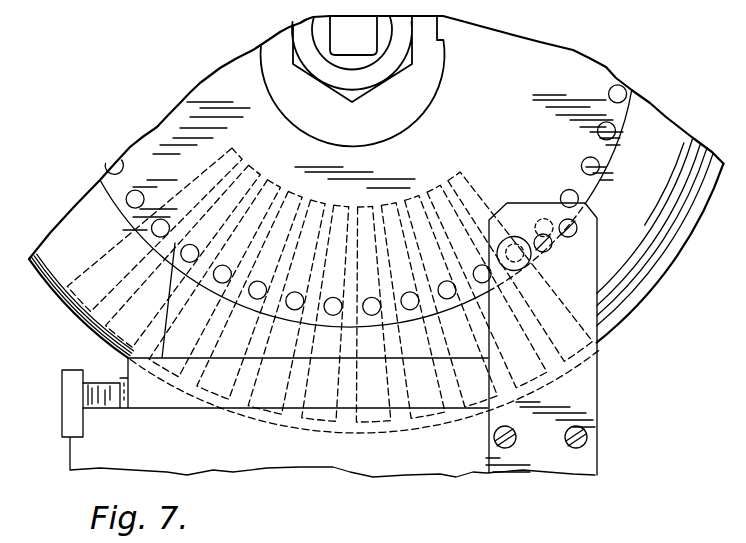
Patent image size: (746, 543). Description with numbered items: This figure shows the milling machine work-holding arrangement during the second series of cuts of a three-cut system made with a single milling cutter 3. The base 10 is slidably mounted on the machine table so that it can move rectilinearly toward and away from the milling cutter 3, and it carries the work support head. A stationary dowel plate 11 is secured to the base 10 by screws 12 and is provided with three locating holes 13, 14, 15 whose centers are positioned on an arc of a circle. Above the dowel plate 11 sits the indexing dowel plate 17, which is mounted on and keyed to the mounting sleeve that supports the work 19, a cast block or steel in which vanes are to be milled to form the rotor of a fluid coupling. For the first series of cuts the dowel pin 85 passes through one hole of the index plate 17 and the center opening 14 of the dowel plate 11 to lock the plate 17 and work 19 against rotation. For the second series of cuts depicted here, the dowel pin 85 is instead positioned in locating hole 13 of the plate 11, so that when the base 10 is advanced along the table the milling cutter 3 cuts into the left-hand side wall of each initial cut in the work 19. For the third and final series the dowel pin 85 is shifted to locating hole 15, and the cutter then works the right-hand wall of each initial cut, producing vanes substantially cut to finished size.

The milling cutter 3 is at (362, 418).
The base 10 is at (455, 467).
The stationary dowel plate 11 is at (588, 375).
The screws 12 is at (587, 437).
The locating hole 13 is at (528, 259).
The center opening 14 is at (553, 247).
The locating hole 15 is at (578, 228).
The indexing dowel plate 17 is at (565, 62).
The work 19 is at (676, 140).
The dowel pin 85 is at (513, 236).